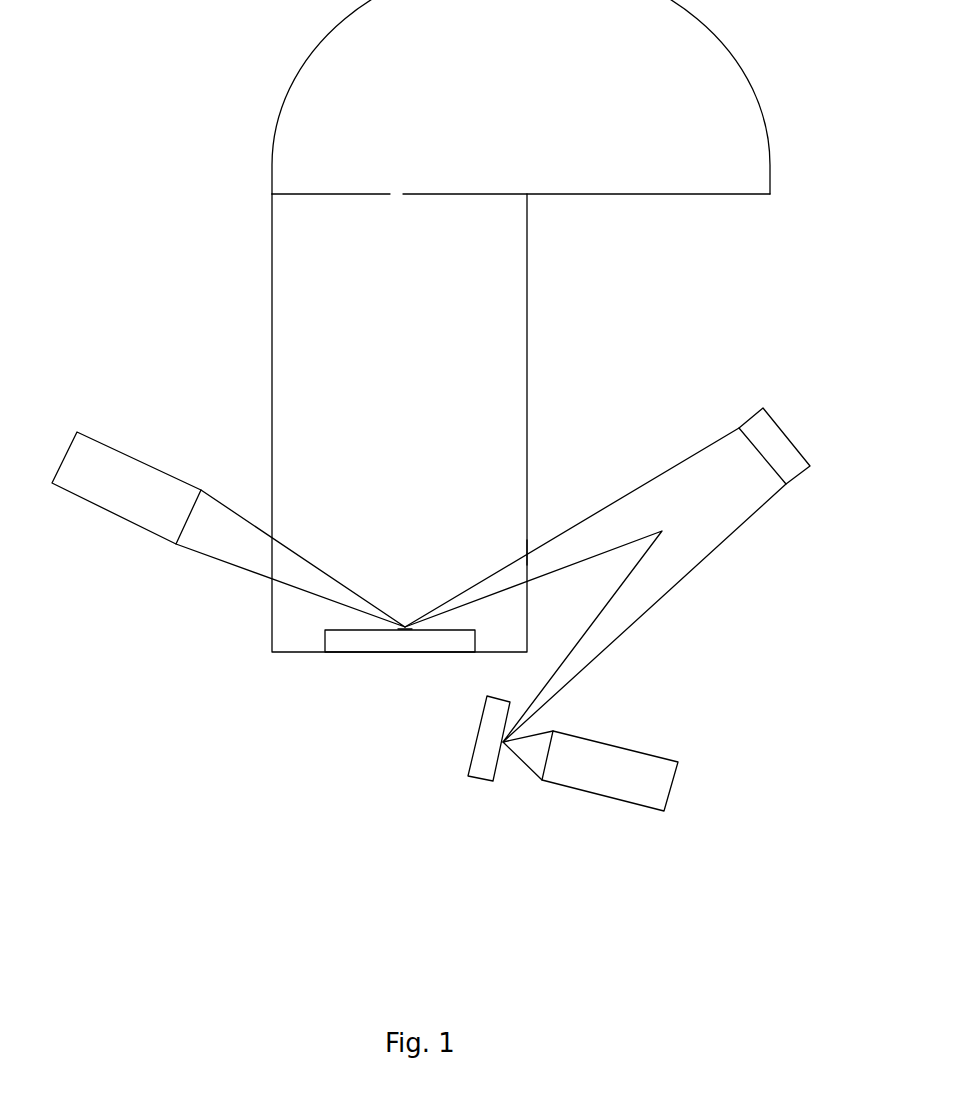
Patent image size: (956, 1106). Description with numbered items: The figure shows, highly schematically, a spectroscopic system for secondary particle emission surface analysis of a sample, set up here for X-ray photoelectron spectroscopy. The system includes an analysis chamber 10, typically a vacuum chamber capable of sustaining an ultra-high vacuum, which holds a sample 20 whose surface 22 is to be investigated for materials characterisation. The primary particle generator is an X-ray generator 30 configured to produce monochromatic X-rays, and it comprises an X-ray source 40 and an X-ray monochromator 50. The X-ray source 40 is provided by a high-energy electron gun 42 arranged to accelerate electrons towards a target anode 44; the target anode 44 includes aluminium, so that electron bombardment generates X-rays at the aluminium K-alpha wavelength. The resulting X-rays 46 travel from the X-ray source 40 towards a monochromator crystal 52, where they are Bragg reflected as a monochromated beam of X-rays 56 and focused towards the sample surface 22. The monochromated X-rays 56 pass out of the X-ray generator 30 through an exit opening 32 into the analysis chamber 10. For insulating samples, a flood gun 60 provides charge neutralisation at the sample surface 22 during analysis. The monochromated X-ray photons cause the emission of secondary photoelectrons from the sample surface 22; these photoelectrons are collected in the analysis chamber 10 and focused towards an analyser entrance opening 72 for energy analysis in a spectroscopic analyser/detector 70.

The analysis chamber 10 is at (270, 288).
The sample 20 is at (333, 643).
The sample surface 22 is at (352, 623).
The X-ray generator 30 is at (604, 591).
The exit opening 32 is at (531, 548).
The X-ray source 40 is at (574, 769).
The high-energy electron gun 42 is at (677, 788).
The target anode 44 is at (470, 747).
The X-rays 46 is at (640, 603).
The X-ray monochromator 50 is at (642, 491).
The monochromator crystal 52 is at (797, 442).
The monochromated beam of X-rays 56 is at (607, 518).
The flood gun 60 is at (97, 508).
The spectroscopic analyser/detector 70 is at (460, 97).
The analyser entrance opening 72 is at (398, 192).